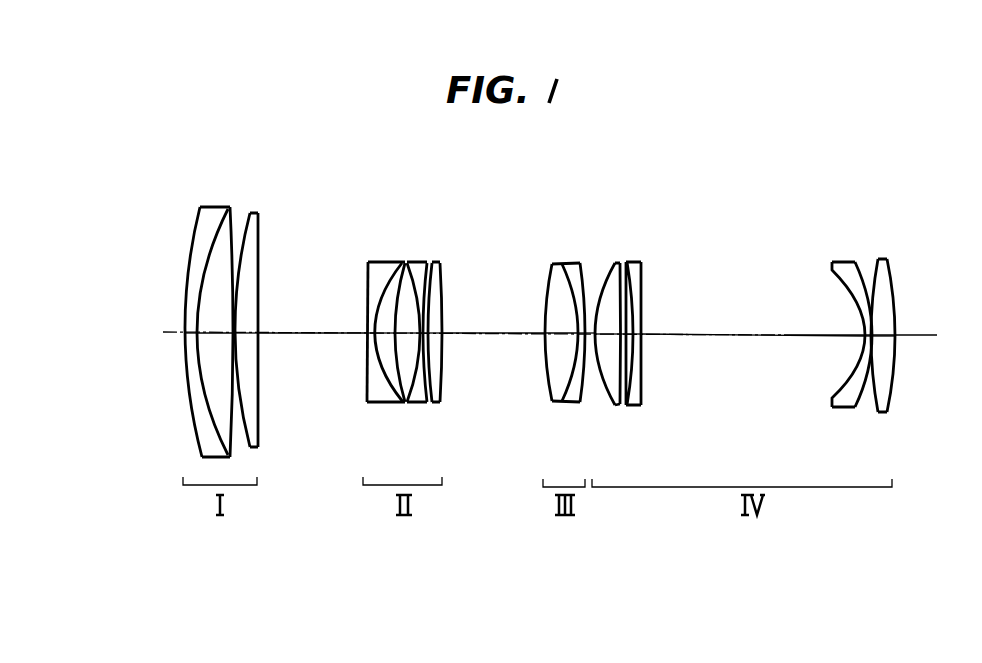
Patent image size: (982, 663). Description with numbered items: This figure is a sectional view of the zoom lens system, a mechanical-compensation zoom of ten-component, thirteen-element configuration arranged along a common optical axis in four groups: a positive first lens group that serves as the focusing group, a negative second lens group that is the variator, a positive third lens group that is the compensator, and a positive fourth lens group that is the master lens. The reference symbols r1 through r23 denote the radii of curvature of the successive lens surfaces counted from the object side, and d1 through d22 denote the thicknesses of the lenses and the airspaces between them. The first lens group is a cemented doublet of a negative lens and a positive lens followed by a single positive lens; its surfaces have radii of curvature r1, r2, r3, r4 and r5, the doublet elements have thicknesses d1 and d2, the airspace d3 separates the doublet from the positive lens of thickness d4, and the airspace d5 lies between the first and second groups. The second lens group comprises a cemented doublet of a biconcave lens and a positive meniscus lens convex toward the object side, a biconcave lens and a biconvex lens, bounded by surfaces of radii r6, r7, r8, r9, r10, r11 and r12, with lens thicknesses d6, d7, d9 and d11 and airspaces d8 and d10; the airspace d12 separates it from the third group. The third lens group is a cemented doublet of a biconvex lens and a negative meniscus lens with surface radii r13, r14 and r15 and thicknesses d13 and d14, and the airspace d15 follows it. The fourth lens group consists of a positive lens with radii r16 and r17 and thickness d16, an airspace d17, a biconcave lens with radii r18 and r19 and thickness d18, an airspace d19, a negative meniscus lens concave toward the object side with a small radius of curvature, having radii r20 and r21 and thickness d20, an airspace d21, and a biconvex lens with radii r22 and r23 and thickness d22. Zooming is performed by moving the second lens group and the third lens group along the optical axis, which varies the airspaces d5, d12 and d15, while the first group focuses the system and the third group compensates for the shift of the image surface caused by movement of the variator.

The radius of curvature of first lens surface r1 is at (195, 226).
The radius of curvature of second lens surface r2 is at (220, 232).
The radius of curvature of third lens surface r3 is at (236, 222).
The radius of curvature of fourth lens surface r4 is at (248, 224).
The radius of curvature of fifth lens surface r5 is at (259, 236).
The radius of curvature of sixth lens surface r6 is at (370, 268).
The radius of curvature of seventh lens surface r7 is at (396, 273).
The radius of curvature of eighth lens surface r8 is at (410, 266).
The radius of curvature of ninth lens surface r9 is at (423, 266).
The radius of curvature of tenth lens surface r10 is at (436, 267).
The radius of curvature of eleventh lens surface r11 is at (440, 283).
The radius of curvature of twelfth lens surface r12 is at (442, 300).
The radius of curvature of thirteenth lens surface r13 is at (547, 275).
The radius of curvature of fourteenth lens surface r14 is at (565, 273).
The radius of curvature of fifteenth lens surface r15 is at (585, 272).
The radius of curvature of sixteenth lens surface r16 is at (608, 268).
The radius of curvature of seventeenth lens surface r17 is at (622, 268).
The radius of curvature of eighteenth lens surface r18 is at (630, 276).
The radius of curvature of nineteenth lens surface r19 is at (641, 295).
The radius of curvature of twentieth lens surface r20 is at (843, 260).
The radius of curvature of twenty-first lens surface r21 is at (864, 270).
The radius of curvature of twenty-second lens surface r22 is at (886, 278).
The radius of curvature of twenty-third lens surface r23 is at (892, 285).
The lens thickness d1 is at (190, 334).
The lens thickness d2 is at (210, 334).
The airspace d3 is at (228, 334).
The lens thickness d4 is at (246, 334).
The airspace d5 is at (285, 332).
The lens thickness d6 is at (372, 334).
The lens thickness d7 is at (388, 334).
The airspace d8 is at (405, 334).
The lens thickness d9 is at (418, 338).
The airspace d10 is at (428, 338).
The lens thickness d11 is at (434, 338).
The airspace d12 is at (460, 333).
The lens thickness d13 is at (558, 335).
The lens thickness d14 is at (577, 337).
The airspace d15 is at (588, 336).
The lens thickness d16 is at (623, 338).
The airspace d17 is at (630, 338).
The lens thickness d18 is at (637, 337).
The airspace d19 is at (787, 336).
The lens thickness d20 is at (867, 340).
The airspace d21 is at (865, 345).
The lens thickness d22 is at (878, 340).